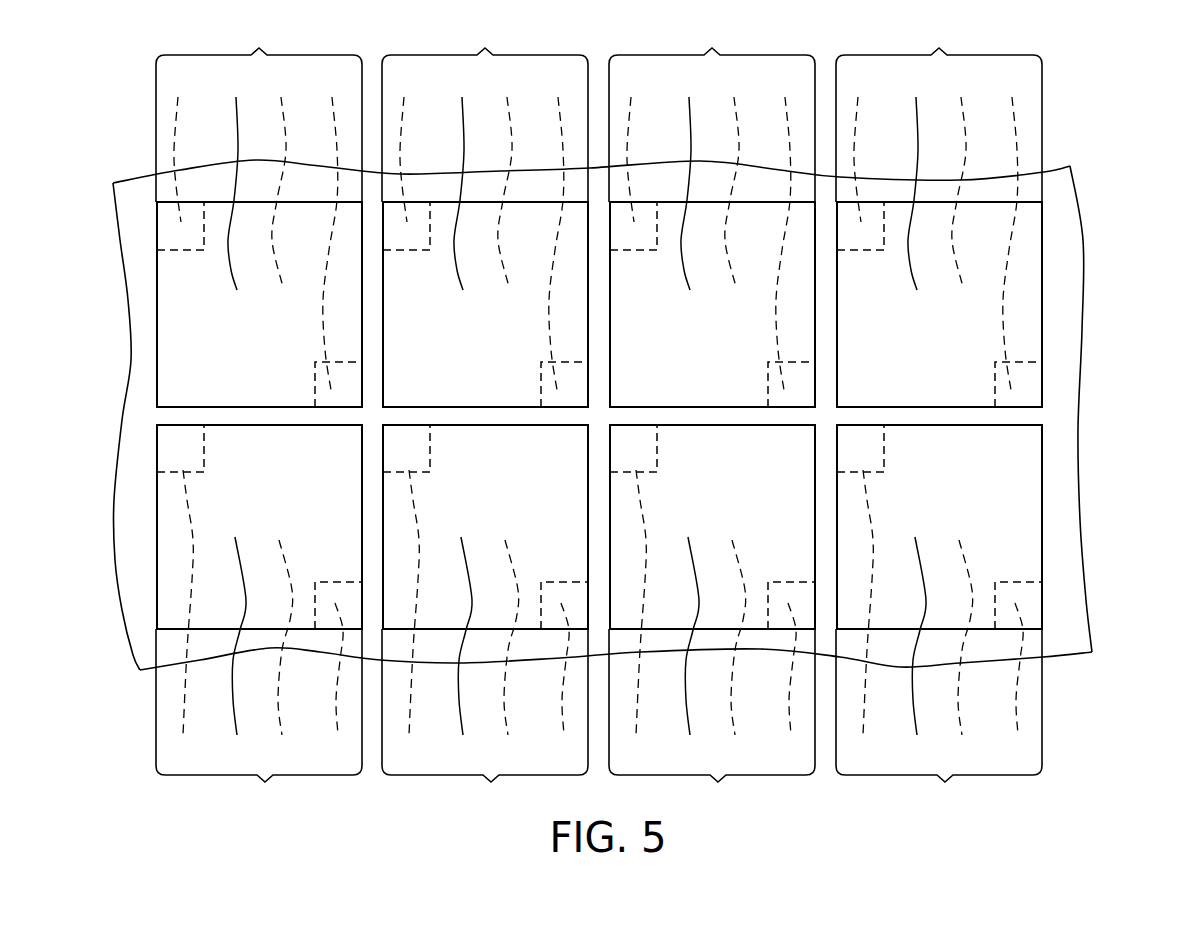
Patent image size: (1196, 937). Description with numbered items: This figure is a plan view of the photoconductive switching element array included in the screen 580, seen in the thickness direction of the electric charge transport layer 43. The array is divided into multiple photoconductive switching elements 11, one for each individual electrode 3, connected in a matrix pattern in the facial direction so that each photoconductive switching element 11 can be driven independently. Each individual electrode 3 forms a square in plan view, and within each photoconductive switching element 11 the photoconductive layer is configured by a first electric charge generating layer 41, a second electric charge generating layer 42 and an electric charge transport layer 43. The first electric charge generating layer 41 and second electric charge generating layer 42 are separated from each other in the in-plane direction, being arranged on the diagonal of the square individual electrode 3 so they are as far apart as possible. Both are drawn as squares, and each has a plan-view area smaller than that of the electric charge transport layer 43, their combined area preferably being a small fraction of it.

The screen 580 is at (1087, 84).
The photoconductive switching element 11 is at (599, 417).
The first electric charge generating layer 41 is at (522, 418).
The individual electrode 3 is at (577, 418).
The electric charge transport layer 43 is at (623, 418).
The second electric charge generating layer 42 is at (676, 418).